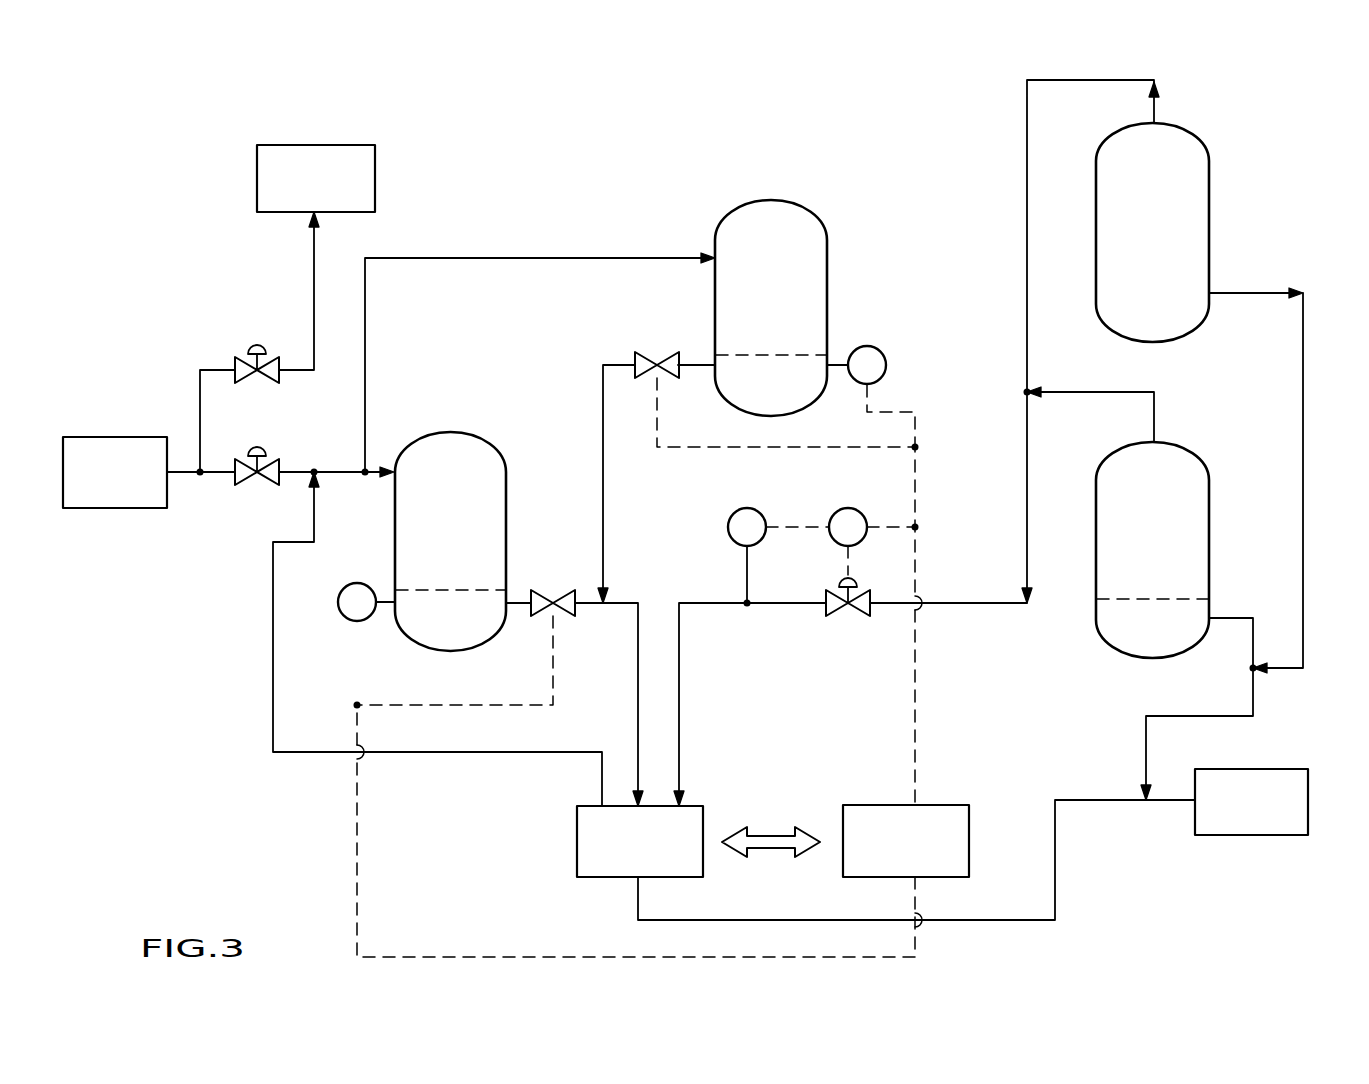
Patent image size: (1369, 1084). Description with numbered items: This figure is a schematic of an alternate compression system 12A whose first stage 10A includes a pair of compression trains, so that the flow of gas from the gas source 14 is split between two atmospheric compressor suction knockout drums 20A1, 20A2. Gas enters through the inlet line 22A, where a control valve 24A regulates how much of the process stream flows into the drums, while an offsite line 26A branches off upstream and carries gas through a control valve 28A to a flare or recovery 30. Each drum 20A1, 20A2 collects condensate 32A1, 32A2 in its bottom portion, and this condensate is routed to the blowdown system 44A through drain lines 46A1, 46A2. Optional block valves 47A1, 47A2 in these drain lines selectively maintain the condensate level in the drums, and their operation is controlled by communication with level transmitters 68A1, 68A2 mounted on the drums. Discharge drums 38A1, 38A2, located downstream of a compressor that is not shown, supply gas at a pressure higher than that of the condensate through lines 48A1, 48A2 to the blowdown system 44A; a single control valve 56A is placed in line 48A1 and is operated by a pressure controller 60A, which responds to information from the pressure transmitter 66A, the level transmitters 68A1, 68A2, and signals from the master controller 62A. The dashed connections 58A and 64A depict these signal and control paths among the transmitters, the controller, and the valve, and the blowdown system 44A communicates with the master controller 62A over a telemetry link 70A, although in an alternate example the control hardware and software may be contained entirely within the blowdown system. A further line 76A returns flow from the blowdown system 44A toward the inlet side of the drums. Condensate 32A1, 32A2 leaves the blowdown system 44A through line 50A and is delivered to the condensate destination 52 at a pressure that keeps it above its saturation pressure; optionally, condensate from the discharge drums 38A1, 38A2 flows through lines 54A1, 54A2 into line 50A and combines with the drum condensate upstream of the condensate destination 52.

The first stage 10A is at (935, 165).
The compression system 12A is at (830, 105).
The gas source 14 is at (122, 488).
The inlet line 22A is at (186, 480).
The control valve 24A is at (262, 486).
The offsite line 26A is at (200, 392).
The control valve 28A is at (257, 348).
The flare or recovery 30 is at (331, 194).
The AC suction KO drum 20A1 is at (485, 490).
The AC suction KO drum 20A2 is at (805, 250).
The condensate 32A1 is at (468, 622).
The condensate 32A2 is at (790, 368).
The block valve 47A1 is at (552, 582).
The block valve 47A2 is at (655, 343).
The drain line 46A1 is at (635, 658).
The drain line 46A2 is at (603, 362).
The level transmitter 68A1 is at (340, 610).
The level transmitter 68A2 is at (875, 347).
The pressure transmitter 66A is at (728, 518).
The pressure controller 60A is at (850, 505).
The control valve 56A is at (851, 626).
The sensor signal line 58A is at (925, 372).
The control signal lines 64A is at (937, 424).
The line 48A1 is at (987, 607).
The line 48A2 is at (1132, 80).
The drum 38A1 is at (1190, 510).
The drum 38A2 is at (1195, 200).
The line 54A1 is at (1255, 700).
The line 54A2 is at (1303, 402).
The blowdown system 44A is at (667, 859).
The master controller 62A is at (933, 859).
The telemetry link 70A is at (775, 822).
The recirculation line 76A is at (452, 753).
The line 50A is at (1057, 878).
The condensate destination 52 is at (1268, 818).